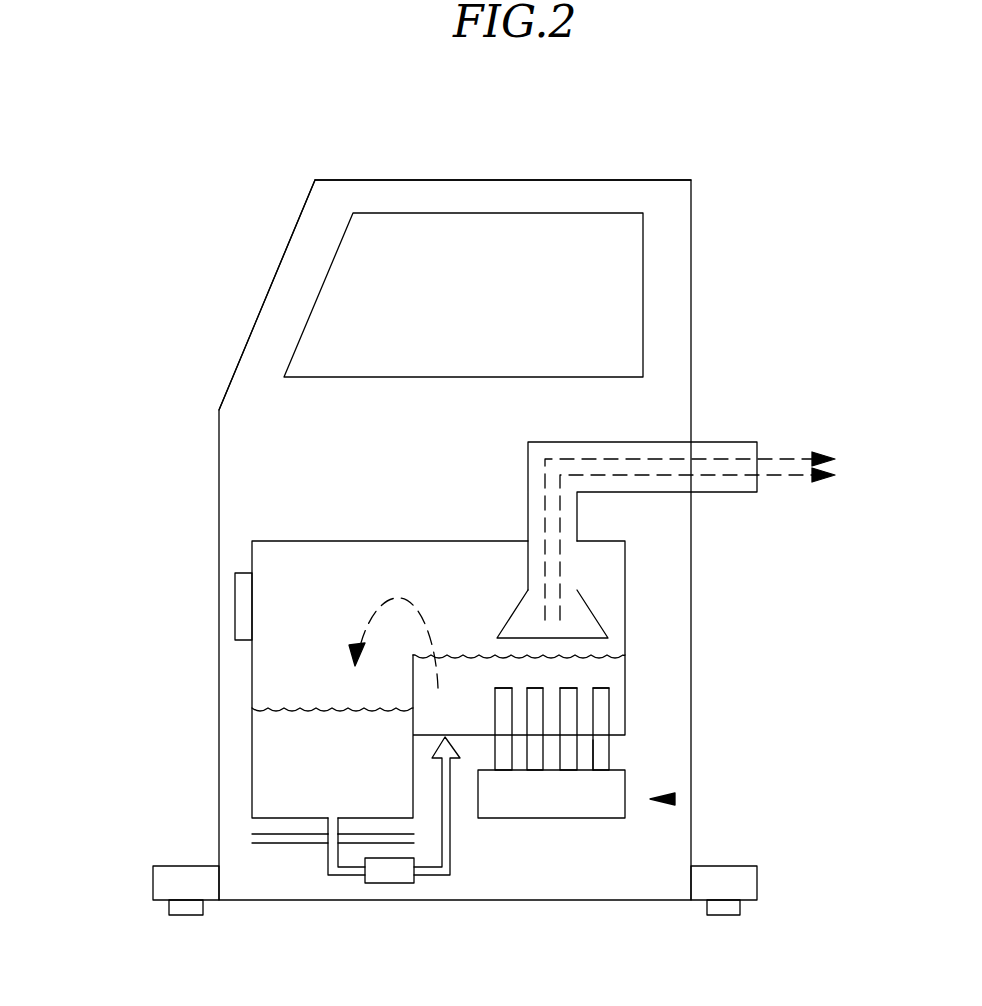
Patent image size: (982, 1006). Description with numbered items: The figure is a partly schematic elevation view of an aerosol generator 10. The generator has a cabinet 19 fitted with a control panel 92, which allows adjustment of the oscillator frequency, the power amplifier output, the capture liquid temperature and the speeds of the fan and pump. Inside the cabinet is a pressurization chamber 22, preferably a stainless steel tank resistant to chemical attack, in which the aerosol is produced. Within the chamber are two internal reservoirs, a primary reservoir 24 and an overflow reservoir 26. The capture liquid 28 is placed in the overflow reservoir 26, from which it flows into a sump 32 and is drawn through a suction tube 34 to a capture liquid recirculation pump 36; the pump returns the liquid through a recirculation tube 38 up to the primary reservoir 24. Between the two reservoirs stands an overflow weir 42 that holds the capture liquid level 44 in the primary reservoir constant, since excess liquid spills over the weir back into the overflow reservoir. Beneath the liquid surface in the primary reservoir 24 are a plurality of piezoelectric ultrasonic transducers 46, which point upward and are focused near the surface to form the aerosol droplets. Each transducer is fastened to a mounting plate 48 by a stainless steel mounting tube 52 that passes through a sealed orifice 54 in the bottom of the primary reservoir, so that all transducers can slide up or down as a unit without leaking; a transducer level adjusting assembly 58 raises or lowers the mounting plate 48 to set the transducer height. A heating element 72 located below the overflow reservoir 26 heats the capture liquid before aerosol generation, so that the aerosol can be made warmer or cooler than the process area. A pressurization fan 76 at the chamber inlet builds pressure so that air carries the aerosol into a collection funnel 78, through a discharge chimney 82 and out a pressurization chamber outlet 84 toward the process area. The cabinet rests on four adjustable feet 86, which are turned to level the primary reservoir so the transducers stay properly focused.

The cooking apparatus 10 is at (686, 136).
The cabinet 19 is at (382, 180).
The control panel 92 is at (267, 295).
The pressurization chamber 22 is at (284, 540).
The primary reservoir 24 is at (473, 675).
The overflow reservoir 26 is at (275, 755).
The capture liquid 28 is at (348, 757).
The sump 32 is at (332, 820).
The suction tube 34 is at (345, 875).
The capture liquid recirculation pump 36 is at (382, 883).
The recirculation tube 38 is at (452, 857).
The overflow weir 42 is at (413, 687).
The capture liquid level 44 is at (607, 657).
The piezoelectric ultrasonic transducers 46 is at (600, 688).
The mounting plate 48 is at (625, 783).
The mounting tube 52 is at (609, 720).
The orifice 54 is at (588, 738).
The transducer level adjusting assembly 58 is at (675, 799).
The heating element 72 is at (252, 838).
The pressurization fan 76 is at (235, 590).
The collection funnel 78 is at (588, 610).
The discharge chimney 82 is at (642, 442).
The pressurization chamber outlet 84 is at (740, 442).
The adjustable feet 86 is at (169, 915).